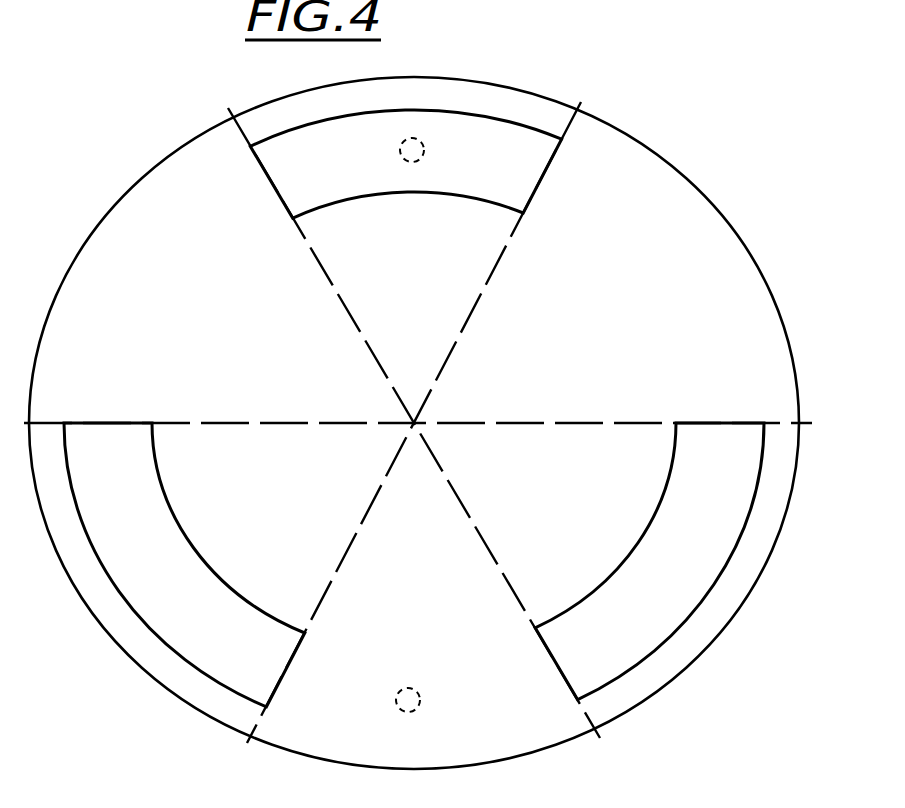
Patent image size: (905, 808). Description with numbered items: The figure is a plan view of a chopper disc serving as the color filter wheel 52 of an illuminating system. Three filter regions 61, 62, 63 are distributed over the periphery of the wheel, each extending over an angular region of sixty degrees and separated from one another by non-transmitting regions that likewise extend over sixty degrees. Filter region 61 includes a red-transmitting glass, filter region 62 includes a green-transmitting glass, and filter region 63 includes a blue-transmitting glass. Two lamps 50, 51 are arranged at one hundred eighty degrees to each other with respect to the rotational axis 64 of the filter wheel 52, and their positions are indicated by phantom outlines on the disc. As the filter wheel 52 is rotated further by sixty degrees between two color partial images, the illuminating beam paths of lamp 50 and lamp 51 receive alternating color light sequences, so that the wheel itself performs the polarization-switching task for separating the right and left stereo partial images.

The lamp 50 is at (425, 152).
The lamp 51 is at (421, 702).
The color filter wheel 52 is at (721, 227).
The filter region 61 is at (347, 172).
The filter region 62 is at (737, 507).
The filter region 63 is at (139, 512).
The rotational axis 64 is at (418, 421).